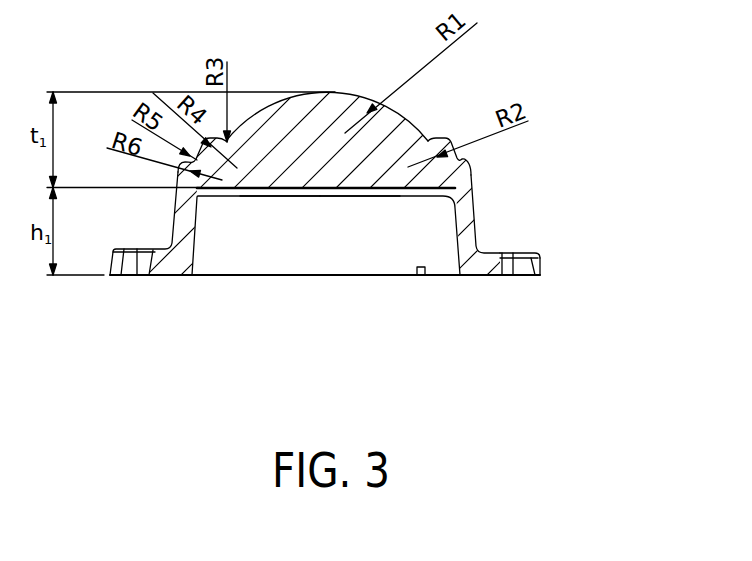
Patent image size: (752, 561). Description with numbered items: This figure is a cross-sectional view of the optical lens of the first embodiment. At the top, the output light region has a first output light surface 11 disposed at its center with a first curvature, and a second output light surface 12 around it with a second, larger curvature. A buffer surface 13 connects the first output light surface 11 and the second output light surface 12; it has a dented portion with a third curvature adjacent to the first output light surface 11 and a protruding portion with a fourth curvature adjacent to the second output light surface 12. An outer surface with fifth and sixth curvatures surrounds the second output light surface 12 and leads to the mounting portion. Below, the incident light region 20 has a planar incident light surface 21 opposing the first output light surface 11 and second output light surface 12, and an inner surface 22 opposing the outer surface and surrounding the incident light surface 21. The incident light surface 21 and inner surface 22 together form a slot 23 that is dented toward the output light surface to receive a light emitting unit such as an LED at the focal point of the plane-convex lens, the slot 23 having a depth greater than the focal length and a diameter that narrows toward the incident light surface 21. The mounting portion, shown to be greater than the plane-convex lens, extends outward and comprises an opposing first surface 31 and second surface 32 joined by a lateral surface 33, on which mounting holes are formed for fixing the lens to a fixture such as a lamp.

The first output light surface 11 is at (335, 92).
The second output light surface 12 is at (448, 142).
The buffer surface 13 is at (475, 205).
The incident light region 20 is at (202, 335).
The incident light surface 21 is at (287, 196).
The inner surface 22 is at (200, 235).
The slot 23 is at (325, 258).
The first surface 31 is at (523, 247).
The second surface 32 is at (525, 278).
The lateral surface 33 is at (542, 265).